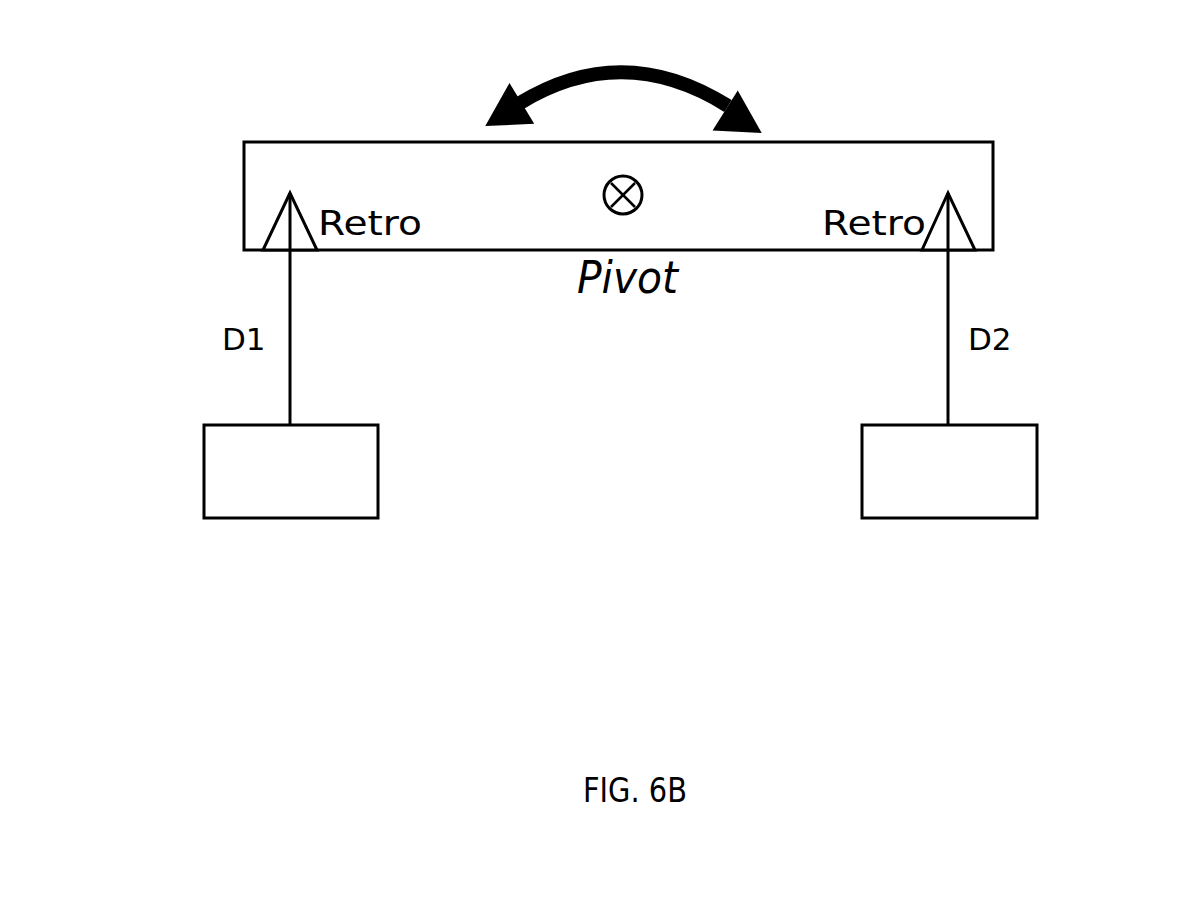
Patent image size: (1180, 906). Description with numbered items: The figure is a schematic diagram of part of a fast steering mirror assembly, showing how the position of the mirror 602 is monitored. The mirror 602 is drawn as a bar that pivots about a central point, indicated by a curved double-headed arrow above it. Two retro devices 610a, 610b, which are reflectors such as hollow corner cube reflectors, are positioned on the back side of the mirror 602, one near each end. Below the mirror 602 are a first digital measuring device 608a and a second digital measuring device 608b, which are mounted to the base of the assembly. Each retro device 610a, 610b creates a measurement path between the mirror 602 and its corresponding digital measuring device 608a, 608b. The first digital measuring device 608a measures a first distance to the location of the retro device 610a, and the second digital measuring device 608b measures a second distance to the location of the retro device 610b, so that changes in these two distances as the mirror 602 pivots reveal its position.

The mirror 602 is at (821, 140).
The retro device 610a is at (270, 225).
The retro device 610b is at (970, 228).
The first digital measuring device 608a is at (204, 472).
The second digital measuring device 608b is at (1037, 483).